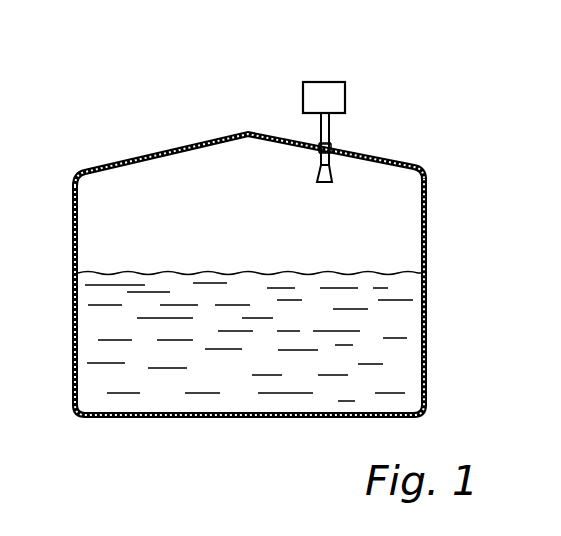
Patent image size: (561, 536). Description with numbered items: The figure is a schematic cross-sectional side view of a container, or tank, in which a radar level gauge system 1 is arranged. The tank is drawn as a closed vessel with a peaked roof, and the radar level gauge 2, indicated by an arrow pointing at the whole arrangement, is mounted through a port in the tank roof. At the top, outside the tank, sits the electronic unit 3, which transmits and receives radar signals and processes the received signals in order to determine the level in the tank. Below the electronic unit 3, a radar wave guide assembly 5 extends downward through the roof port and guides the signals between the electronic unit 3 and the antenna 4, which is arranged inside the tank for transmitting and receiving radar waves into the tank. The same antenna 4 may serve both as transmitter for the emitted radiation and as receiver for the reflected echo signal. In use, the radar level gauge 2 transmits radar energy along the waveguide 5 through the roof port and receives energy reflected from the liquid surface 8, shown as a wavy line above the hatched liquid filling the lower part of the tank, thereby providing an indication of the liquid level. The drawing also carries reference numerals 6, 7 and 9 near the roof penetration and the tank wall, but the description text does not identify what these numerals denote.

The radar level gauge system 1 is at (298, 267).
The radar level gauge 2 is at (266, 52).
The electronic unit 3 is at (345, 93).
The antenna 4 is at (334, 175).
The radar wave guide assembly 5 is at (330, 141).
The mounting fitting 6 is at (323, 146).
The tank roof 7 is at (421, 164).
The liquid surface 8 is at (147, 272).
The tank opening 9 is at (333, 150).